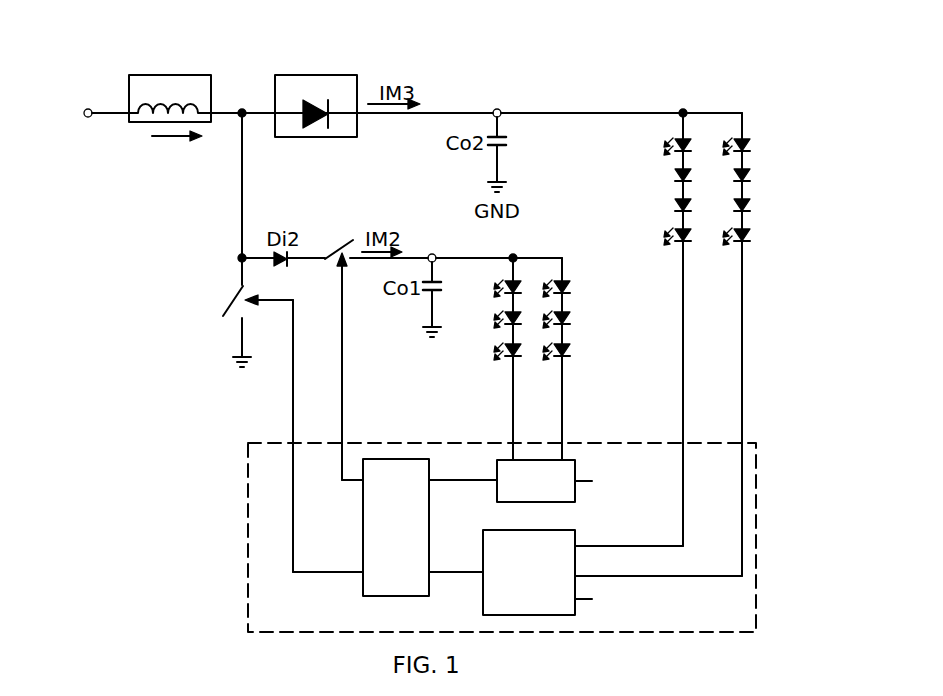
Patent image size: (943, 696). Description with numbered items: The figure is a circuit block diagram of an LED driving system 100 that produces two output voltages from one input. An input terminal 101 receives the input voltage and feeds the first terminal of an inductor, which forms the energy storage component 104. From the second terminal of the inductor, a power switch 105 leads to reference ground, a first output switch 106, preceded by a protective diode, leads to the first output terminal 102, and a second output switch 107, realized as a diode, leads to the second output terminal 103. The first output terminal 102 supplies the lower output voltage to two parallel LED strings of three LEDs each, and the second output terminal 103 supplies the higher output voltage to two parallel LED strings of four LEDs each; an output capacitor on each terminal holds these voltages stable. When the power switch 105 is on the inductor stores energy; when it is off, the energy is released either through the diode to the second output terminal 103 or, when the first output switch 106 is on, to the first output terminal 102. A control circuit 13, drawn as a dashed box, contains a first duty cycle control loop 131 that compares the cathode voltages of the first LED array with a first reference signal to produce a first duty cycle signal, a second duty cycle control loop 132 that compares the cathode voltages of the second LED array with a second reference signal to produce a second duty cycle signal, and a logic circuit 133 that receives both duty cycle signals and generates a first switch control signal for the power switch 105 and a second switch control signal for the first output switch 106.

The LED driving system 100 is at (750, 56).
The input terminal 101 is at (89, 107).
The first output terminal 102 is at (432, 254).
The second output terminal 103 is at (497, 109).
The energy storage component 104 is at (170, 75).
The power switch 105 is at (275, 415).
The first output switch 106 is at (373, 349).
The second output switch 107 is at (290, 75).
The control circuit 13 is at (248, 515).
The first duty cycle control loop 131 is at (580, 481).
The second duty cycle control loop 132 is at (612, 569).
The logic circuit 133 is at (385, 527).